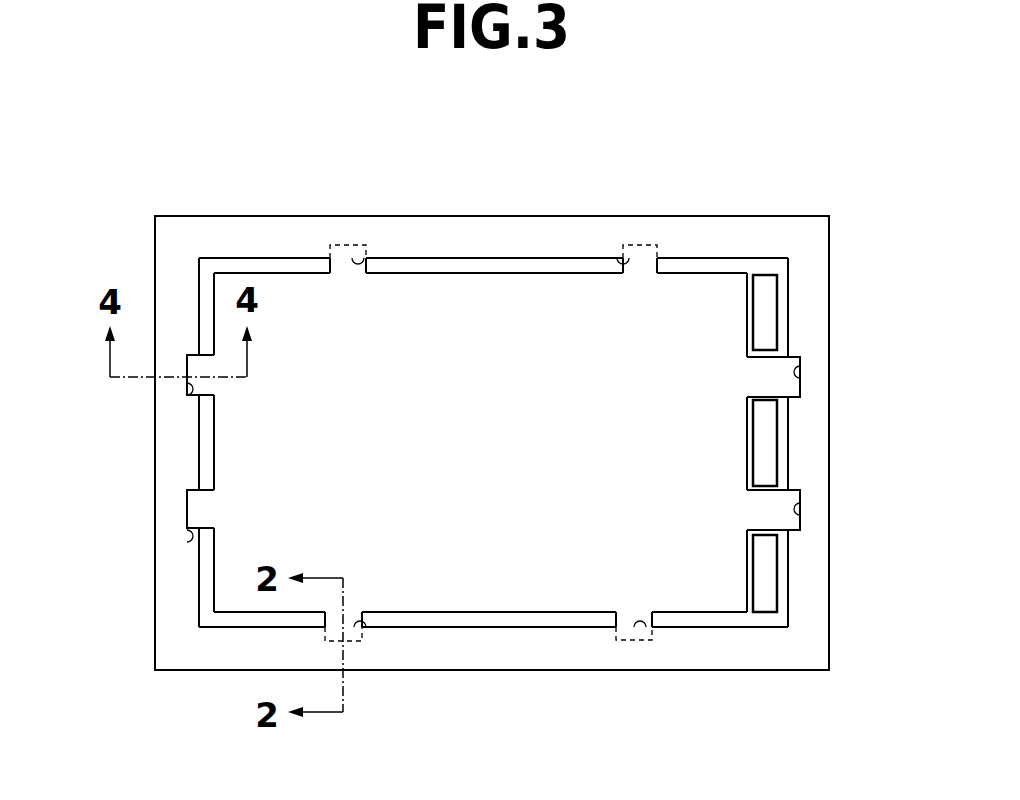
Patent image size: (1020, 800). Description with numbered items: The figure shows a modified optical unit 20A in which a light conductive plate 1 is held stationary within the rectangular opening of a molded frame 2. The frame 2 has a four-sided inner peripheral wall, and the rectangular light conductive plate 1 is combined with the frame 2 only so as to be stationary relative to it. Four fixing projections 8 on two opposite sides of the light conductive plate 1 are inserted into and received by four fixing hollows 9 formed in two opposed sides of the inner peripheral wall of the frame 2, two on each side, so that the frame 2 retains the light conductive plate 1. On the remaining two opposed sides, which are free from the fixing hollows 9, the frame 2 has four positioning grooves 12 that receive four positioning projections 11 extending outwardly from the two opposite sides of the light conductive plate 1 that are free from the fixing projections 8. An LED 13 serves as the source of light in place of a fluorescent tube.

The light conductive plate 1 is at (480, 442).
The frame 2 is at (165, 467).
The fixing projections 8 is at (330, 266).
The fixing hollows 9 is at (364, 257).
The positioning projections 11 is at (190, 358).
The positioning grooves 12 is at (190, 397).
The LED 13 is at (773, 313).
The optical unit 20A is at (730, 195).